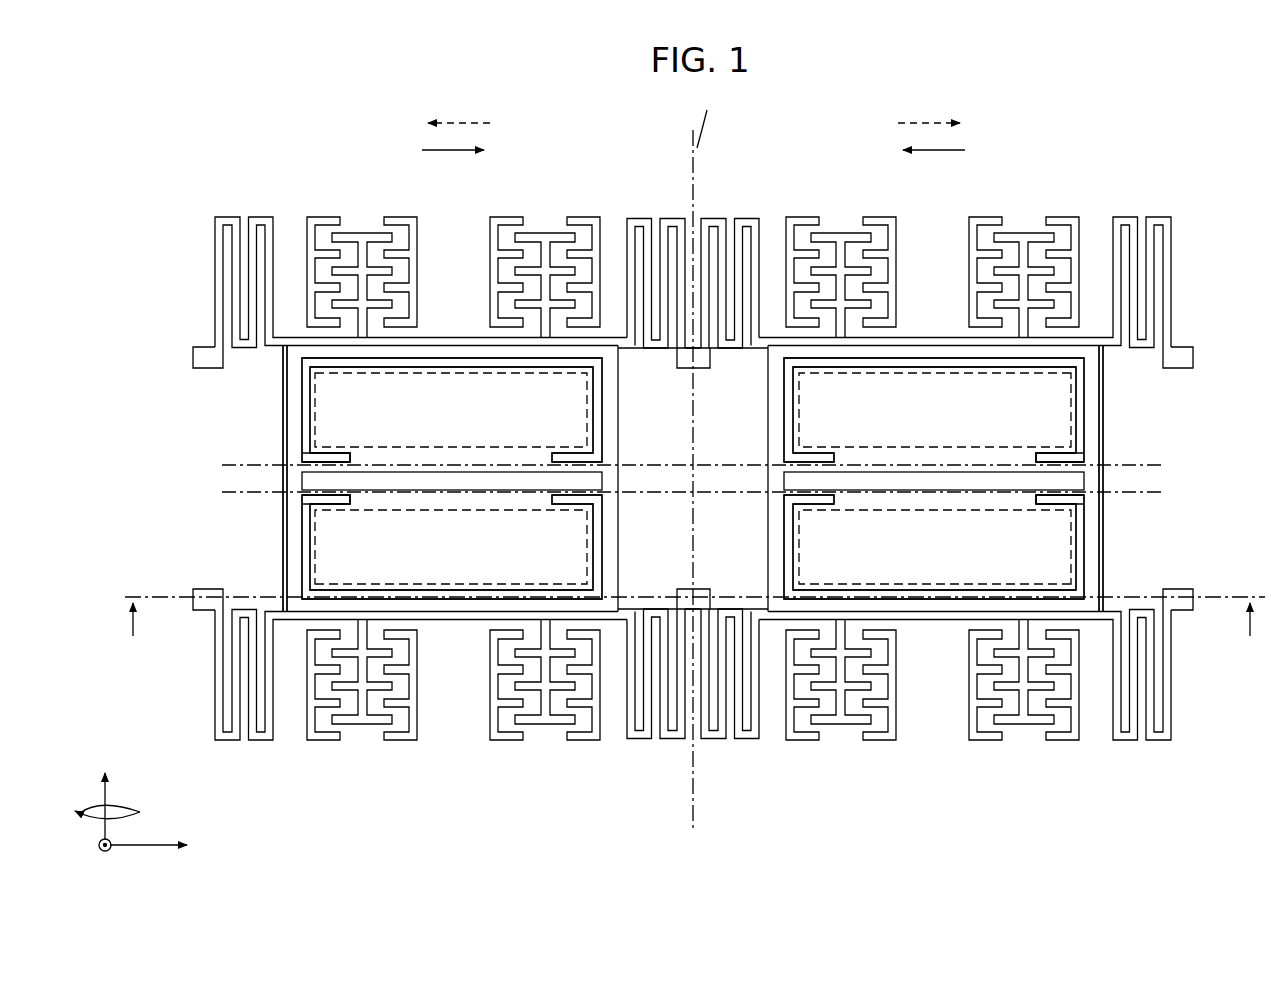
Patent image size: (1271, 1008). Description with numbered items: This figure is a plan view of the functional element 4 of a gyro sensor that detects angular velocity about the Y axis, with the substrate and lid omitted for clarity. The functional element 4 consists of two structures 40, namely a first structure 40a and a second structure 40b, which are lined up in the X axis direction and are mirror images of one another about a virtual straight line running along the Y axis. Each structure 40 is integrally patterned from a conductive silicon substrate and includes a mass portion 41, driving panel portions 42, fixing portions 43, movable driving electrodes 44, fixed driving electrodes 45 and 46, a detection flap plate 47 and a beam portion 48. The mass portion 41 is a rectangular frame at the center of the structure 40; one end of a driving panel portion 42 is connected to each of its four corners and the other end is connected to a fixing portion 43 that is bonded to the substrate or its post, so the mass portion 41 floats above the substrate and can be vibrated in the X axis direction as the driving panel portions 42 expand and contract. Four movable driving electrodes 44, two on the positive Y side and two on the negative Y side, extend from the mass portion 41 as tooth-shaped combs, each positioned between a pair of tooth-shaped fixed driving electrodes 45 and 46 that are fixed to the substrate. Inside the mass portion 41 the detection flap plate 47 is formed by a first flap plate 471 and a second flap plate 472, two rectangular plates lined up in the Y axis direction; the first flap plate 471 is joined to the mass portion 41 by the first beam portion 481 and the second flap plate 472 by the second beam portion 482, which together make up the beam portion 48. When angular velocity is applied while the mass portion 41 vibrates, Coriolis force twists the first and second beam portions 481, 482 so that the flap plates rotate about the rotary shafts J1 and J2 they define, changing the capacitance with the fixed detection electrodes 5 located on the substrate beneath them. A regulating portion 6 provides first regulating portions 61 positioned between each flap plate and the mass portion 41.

The functional element 4 is at (1197, 172).
The fixed detection electrode 5 is at (437, 392).
The regulating portion 6 is at (707, 477).
The structure 40 is at (693, 606).
The structure 40a is at (452, 793).
The structure 40b is at (938, 793).
The mass portion 41 is at (768, 410).
The driving panel portion 42 is at (230, 216).
The fixing portion 43 is at (205, 347).
The movable driving electrode 44 is at (362, 232).
The fixed driving electrode 45 is at (320, 216).
The fixed driving electrode 46 is at (398, 216).
The detection flap plate 47 is at (693, 478).
The first flap plate 471 is at (304, 559).
The second flap plate 472 is at (304, 399).
The beam portion 48 is at (693, 477).
The first beam portion 481 is at (340, 500).
The second beam portion 482 is at (340, 457).
The first regulating portion 61 is at (286, 346).
The rotary shaft J1 is at (226, 492).
The rotary shaft J2 is at (226, 465).